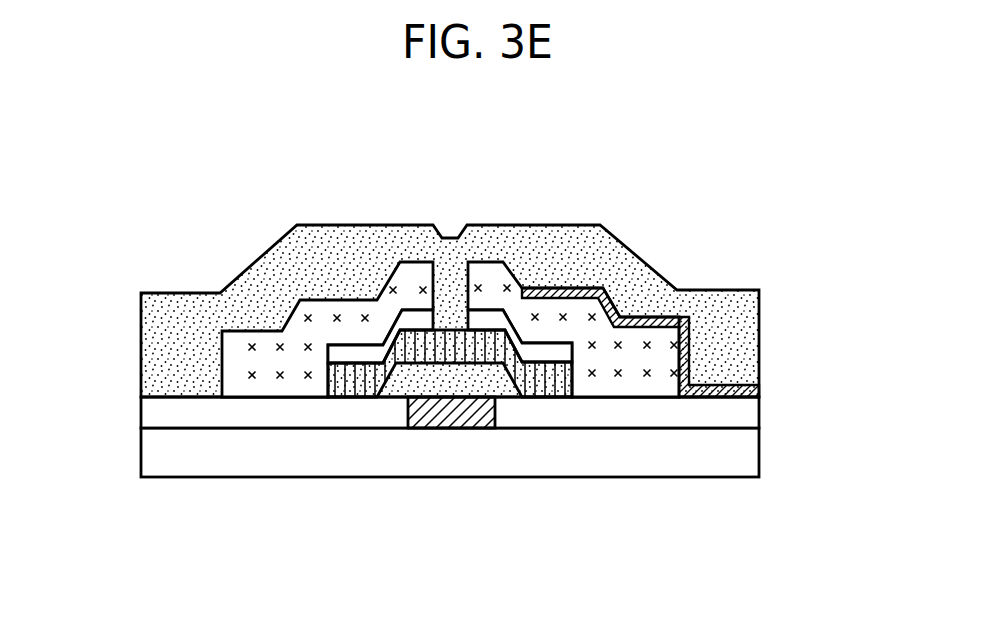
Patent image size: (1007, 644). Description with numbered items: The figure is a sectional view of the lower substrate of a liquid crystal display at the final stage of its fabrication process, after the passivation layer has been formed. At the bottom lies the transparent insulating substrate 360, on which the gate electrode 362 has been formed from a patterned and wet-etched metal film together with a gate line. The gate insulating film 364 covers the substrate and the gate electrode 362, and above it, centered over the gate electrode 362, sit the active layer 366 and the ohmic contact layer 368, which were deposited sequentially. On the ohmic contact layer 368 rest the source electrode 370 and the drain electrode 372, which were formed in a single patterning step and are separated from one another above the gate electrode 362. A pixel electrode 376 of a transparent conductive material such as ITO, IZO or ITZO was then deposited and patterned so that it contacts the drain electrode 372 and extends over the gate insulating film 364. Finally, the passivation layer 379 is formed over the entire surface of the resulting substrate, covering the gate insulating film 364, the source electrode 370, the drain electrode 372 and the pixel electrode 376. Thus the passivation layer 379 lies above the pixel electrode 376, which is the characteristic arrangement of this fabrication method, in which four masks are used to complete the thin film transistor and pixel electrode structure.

The transparent insulating substrate 360 is at (761, 447).
The gate electrode 362 is at (457, 428).
The gate insulating film 364 is at (761, 403).
The active layer 366 is at (330, 382).
The ohmic contact layer 368 is at (330, 352).
The source electrode 370 is at (327, 310).
The drain electrode 372 is at (548, 313).
The pixel electrode 376 is at (761, 385).
The passivation layer 379 is at (622, 258).